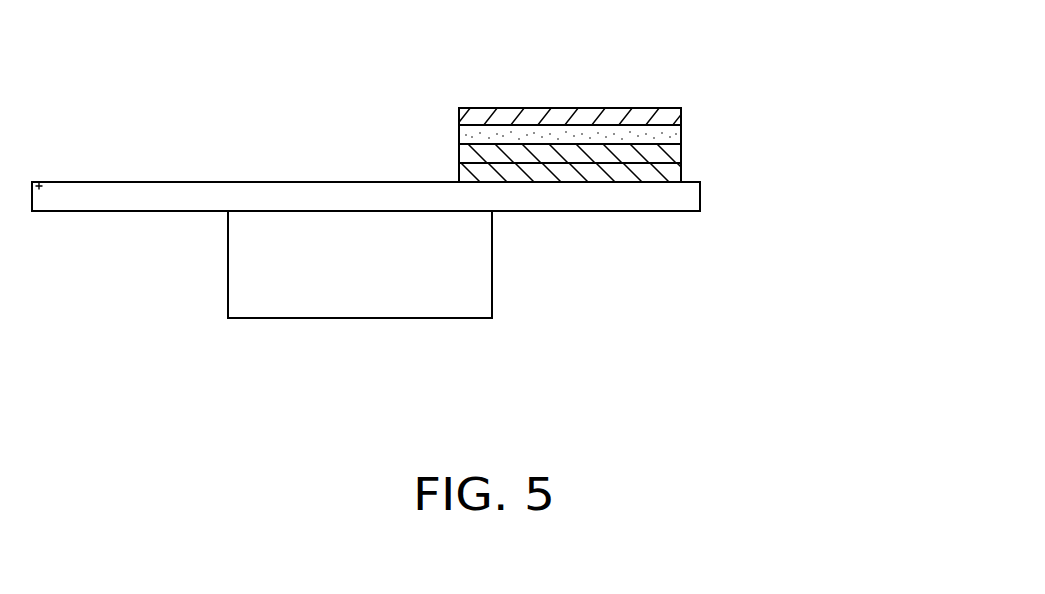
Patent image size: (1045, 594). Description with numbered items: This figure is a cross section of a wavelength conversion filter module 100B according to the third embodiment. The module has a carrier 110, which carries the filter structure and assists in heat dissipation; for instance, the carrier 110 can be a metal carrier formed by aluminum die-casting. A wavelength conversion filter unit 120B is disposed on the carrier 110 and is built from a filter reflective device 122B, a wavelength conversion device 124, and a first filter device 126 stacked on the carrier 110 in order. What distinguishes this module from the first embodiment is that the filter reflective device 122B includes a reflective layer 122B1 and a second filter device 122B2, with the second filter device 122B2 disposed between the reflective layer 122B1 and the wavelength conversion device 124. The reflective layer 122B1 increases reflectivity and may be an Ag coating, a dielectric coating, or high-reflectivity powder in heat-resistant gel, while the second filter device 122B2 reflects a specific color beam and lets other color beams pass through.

The wavelength conversion filter module 100B is at (487, 212).
The carrier 110 is at (629, 202).
The wavelength conversion filter unit 120B is at (687, 119).
The filter reflective device 122B is at (650, 160).
The reflective layer 122B1 is at (670, 171).
The second filter device 122B2 is at (670, 153).
The wavelength conversion device 124 is at (670, 135).
The first filter device 126 is at (670, 116).